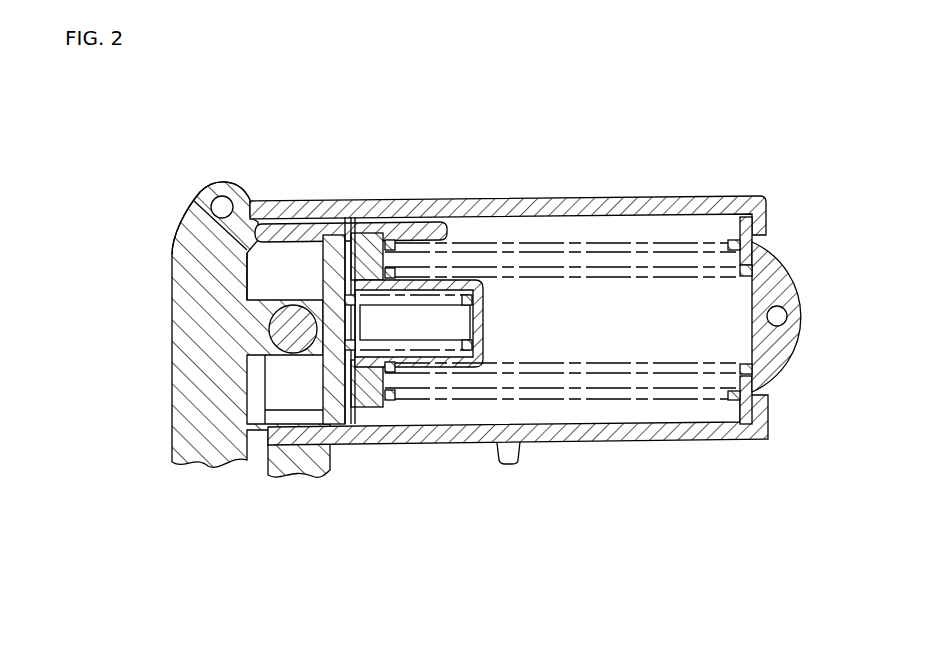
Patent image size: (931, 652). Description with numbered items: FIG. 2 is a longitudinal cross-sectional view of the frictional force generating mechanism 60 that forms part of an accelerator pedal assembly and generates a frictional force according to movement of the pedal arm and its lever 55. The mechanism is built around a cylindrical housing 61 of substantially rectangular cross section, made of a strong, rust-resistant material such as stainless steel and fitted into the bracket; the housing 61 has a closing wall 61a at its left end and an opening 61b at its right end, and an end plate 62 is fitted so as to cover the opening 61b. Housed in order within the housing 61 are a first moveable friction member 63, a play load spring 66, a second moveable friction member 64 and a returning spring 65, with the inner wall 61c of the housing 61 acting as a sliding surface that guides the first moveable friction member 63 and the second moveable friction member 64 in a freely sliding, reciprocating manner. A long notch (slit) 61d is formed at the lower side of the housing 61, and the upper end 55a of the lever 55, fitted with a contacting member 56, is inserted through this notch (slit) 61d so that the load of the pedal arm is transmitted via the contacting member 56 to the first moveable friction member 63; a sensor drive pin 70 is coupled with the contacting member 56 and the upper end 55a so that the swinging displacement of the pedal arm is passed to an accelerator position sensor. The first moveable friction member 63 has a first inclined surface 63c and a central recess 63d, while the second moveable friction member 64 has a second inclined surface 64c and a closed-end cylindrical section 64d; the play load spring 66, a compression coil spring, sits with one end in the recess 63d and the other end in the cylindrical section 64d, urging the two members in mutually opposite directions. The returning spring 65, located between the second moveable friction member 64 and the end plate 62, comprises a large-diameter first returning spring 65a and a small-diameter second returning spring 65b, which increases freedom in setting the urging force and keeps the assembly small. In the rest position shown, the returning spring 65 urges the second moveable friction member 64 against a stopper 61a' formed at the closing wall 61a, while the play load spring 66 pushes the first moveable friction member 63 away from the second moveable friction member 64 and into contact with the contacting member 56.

The lever 55 is at (242, 470).
The upper end 55a is at (292, 372).
The contacting member 56 is at (178, 245).
The frictional force generating mechanism 60 is at (672, 197).
The housing 61 is at (583, 197).
The closing wall 61a is at (167, 281).
The stopper 61a' is at (187, 193).
The opening 61b is at (773, 237).
The inner wall 61c is at (535, 200).
The notch (slit) 61d is at (457, 447).
The end plate 62 is at (787, 300).
The first moveable friction member 63 is at (318, 368).
The first inclined surface 63c is at (348, 235).
The recess 63d is at (325, 240).
The second moveable friction member 64 is at (265, 413).
The second inclined surface 64c is at (365, 215).
The cylindrical section 64d is at (458, 287).
The returning spring 65 is at (680, 545).
The first returning spring 65a is at (548, 375).
The second returning spring 65b is at (628, 367).
The play load spring 66 is at (385, 200).
The sensor drive pin 70 is at (248, 193).